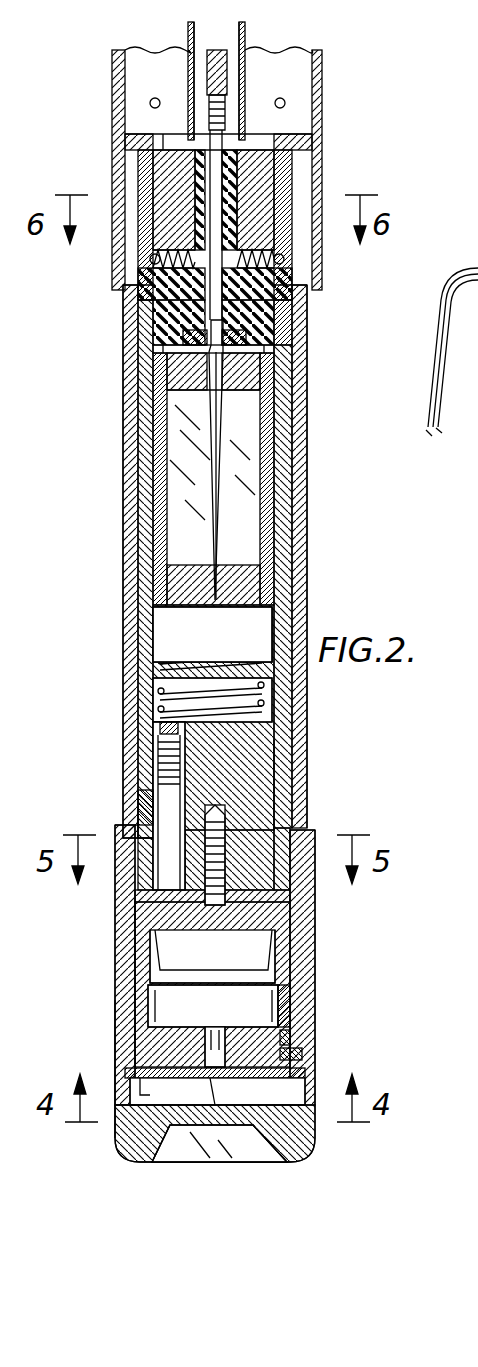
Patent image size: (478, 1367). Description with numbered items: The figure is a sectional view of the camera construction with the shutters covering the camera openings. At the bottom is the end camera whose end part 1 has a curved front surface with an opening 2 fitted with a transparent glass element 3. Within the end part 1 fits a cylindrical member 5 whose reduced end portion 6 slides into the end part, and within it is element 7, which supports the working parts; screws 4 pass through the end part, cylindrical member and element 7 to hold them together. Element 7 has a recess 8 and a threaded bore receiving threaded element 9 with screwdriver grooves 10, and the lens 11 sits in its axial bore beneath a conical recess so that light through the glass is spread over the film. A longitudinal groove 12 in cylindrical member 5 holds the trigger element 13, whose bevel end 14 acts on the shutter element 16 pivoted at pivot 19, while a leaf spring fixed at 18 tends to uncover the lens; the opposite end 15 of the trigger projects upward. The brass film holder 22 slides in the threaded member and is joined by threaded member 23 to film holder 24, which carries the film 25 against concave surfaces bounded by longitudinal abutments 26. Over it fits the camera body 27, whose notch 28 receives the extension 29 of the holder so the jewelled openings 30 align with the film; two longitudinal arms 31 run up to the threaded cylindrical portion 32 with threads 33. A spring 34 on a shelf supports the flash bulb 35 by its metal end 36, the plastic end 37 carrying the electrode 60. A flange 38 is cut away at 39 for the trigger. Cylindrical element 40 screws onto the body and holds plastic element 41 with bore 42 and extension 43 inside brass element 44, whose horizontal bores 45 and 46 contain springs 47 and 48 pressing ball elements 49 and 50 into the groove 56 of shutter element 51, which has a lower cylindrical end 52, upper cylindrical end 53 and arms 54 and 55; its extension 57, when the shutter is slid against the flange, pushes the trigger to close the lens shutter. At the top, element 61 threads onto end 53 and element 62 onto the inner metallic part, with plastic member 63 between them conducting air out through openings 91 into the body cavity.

The end part 1 is at (296, 1140).
The opening 2 is at (162, 1162).
The transparent glass element 3 is at (248, 1162).
The screws 4 is at (302, 1055).
The cylindrical member 5 is at (315, 962).
The reduced end portion 6 is at (290, 1038).
The supporting element 7 is at (290, 1008).
The recess 8 is at (238, 988).
The threaded element 9 is at (228, 1030).
The grooves 10 is at (212, 1018).
The lens 11 is at (222, 1080).
The groove 12 is at (115, 1028).
The trigger element 13 is at (135, 972).
The bevel end 14 is at (117, 1110).
The opposite end of trigger element 15 is at (135, 928).
The shutter element 16 is at (219, 1143).
The leaf spring connection 18 is at (300, 1078).
The pivot 19 is at (156, 1084).
The film holder 22 is at (207, 883).
The threaded member 23 is at (230, 918).
The film holder 24 is at (255, 725).
The film 25 is at (158, 776).
The longitudinal abutments 26 is at (158, 726).
The camera body 27 is at (153, 748).
The notch 28 is at (268, 775).
The extension 29 is at (290, 810).
The openings 30 is at (138, 798).
The longitudinal arms 31 is at (138, 534).
The cylindrical portion 32 is at (153, 395).
The threads 33 is at (153, 370).
The spring 34 is at (158, 628).
The flash bulb 35 is at (153, 462).
The metal end 36 is at (167, 583).
The plastic end 37 is at (230, 380).
The flange 38 is at (310, 832).
The cut away portion 39 is at (118, 888).
The cylindrical element 40 is at (274, 348).
The plastic element 41 is at (274, 322).
The longitudinal bore 42 is at (153, 330).
The extension 43 is at (250, 180).
The cylindrical brass element 44 is at (300, 140).
The horizontal bore 45 is at (138, 290).
The horizontal bore 46 is at (292, 295).
The spring 47 is at (153, 260).
The spring 48 is at (292, 258).
The ball element 49 is at (149, 262).
The ball element 50 is at (290, 265).
The shutter element 51 is at (310, 550).
The lower cylindrical end 52 is at (292, 772).
The upper cylindrical end 53 is at (138, 176).
The longitudinal arm 54 is at (307, 440).
The longitudinal arm 55 is at (123, 496).
The groove 56 is at (292, 308).
The extension 57 is at (115, 824).
The electrode 60 is at (274, 362).
The element 61 is at (322, 62).
The element 62 is at (190, 36).
The plastic member 63 is at (112, 62).
The openings 91 is at (150, 100).